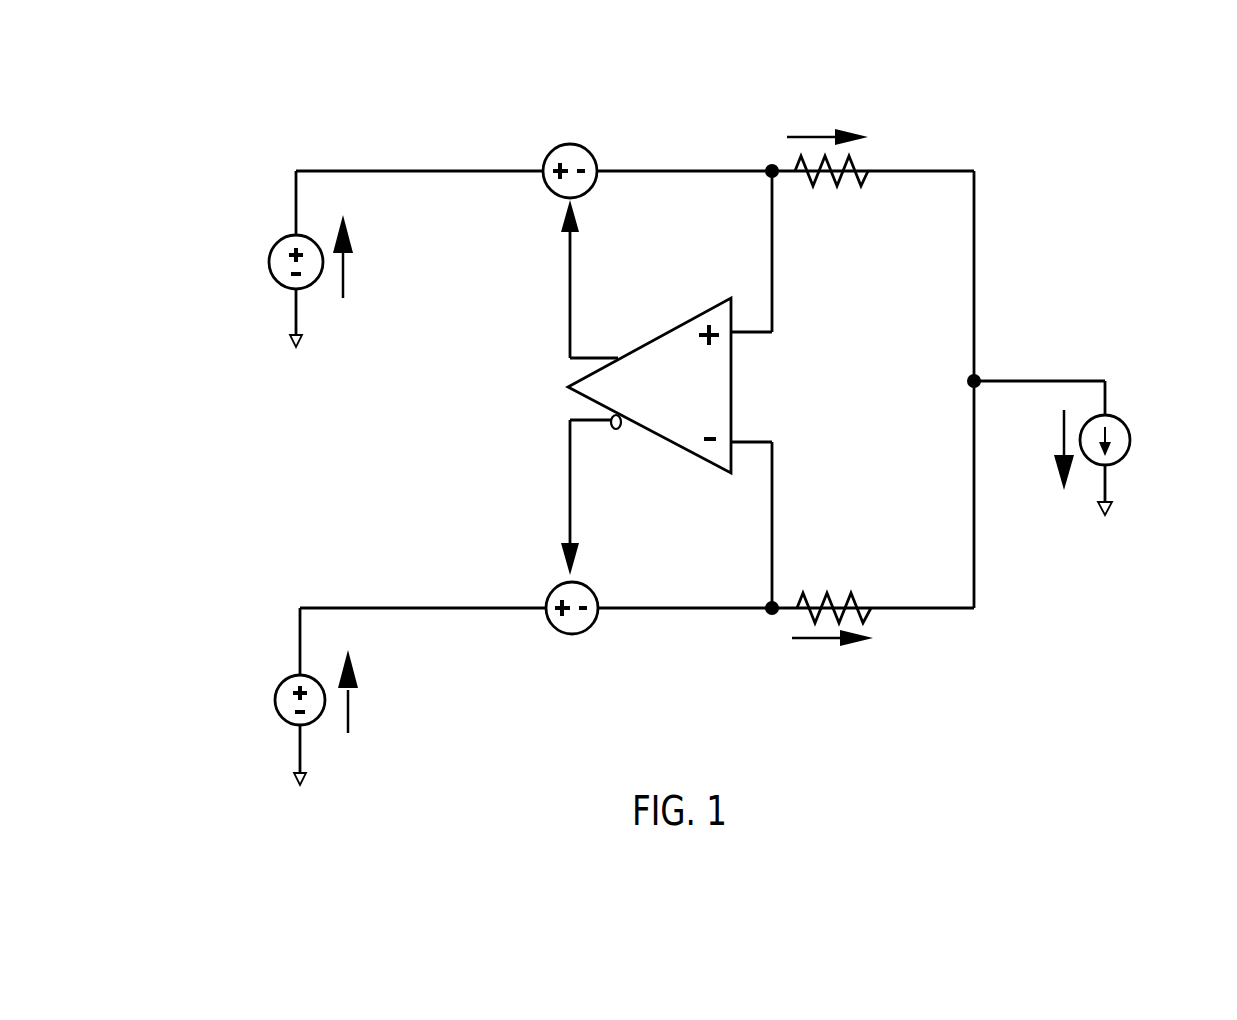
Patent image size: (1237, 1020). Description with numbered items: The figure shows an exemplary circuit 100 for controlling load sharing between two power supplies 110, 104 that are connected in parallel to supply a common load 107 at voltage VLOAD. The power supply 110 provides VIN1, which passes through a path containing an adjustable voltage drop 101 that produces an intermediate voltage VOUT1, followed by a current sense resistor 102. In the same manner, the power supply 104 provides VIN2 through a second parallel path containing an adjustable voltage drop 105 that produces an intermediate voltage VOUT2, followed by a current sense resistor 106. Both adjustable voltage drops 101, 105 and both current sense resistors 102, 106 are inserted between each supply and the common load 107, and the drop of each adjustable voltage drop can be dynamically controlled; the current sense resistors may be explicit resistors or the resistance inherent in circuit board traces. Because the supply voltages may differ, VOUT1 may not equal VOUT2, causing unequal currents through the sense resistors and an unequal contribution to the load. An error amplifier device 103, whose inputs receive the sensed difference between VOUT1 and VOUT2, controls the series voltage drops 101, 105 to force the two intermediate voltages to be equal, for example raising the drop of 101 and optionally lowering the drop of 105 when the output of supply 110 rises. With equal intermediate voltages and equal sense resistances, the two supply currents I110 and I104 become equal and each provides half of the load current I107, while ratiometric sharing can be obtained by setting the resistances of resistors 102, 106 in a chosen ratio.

The circuit 100 is at (272, 85).
The adjustable voltage drop 101 is at (570, 144).
The current sense resistor 102 is at (831, 230).
The error amplifier device 103 is at (731, 384).
The power supply 104 is at (275, 700).
The adjustable voltage drop 105 is at (572, 634).
The current sense resistor 106 is at (832, 545).
The load 107 is at (1130, 440).
The power supply 110 is at (270, 258).